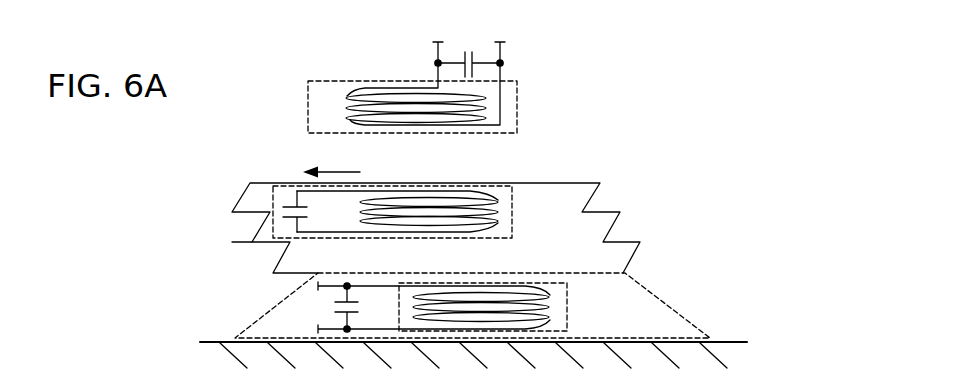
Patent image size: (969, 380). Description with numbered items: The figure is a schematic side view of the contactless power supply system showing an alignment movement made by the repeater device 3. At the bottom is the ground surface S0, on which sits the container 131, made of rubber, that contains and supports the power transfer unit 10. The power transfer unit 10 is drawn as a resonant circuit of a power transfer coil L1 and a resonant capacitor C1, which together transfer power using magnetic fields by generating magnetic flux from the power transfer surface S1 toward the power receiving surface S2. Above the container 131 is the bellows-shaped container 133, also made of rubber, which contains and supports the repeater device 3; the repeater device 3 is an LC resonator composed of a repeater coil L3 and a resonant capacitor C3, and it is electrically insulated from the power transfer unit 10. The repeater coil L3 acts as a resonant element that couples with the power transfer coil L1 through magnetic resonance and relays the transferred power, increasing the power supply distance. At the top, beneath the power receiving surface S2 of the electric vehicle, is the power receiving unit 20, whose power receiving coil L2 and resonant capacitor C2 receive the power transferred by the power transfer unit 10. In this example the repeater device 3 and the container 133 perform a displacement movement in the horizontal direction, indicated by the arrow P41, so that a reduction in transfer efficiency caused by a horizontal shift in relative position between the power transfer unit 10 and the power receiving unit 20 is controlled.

The power receiving unit 20 is at (518, 97).
The resonant capacitor C2 is at (474, 58).
The power receiving coil L2 is at (347, 92).
The power receiving surface S2 is at (480, 133).
The power transfer surface S1 is at (578, 183).
The repeater device 3 is at (513, 197).
The resonant capacitor C3 is at (285, 206).
The repeater coil L3 is at (498, 222).
The arrow P41 is at (334, 172).
The container 133 is at (252, 242).
The container 131 is at (282, 299).
The ground surface S0 is at (735, 341).
The power transfer unit 10 is at (568, 318).
The resonant capacitor C1 is at (337, 313).
The power transfer coil L1 is at (548, 310).